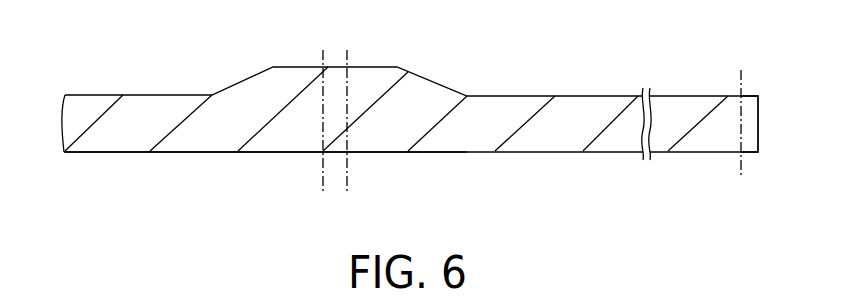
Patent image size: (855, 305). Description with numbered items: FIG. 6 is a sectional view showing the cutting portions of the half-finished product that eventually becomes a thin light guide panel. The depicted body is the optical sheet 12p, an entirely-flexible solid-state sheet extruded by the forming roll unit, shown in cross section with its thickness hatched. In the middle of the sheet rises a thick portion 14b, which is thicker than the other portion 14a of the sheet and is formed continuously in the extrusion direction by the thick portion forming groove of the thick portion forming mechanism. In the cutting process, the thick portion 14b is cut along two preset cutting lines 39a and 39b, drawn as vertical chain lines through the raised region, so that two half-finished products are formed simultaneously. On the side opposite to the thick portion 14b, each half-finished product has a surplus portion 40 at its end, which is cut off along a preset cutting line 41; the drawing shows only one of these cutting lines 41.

The optical sheet 12p is at (522, 152).
The first flat portion 14a is at (107, 153).
The thick portion 14b is at (263, 153).
The cutting line 39a is at (323, 60).
The cutting line 39b is at (347, 60).
The surplus portion 40 is at (750, 152).
The cutting line 41 is at (741, 87).